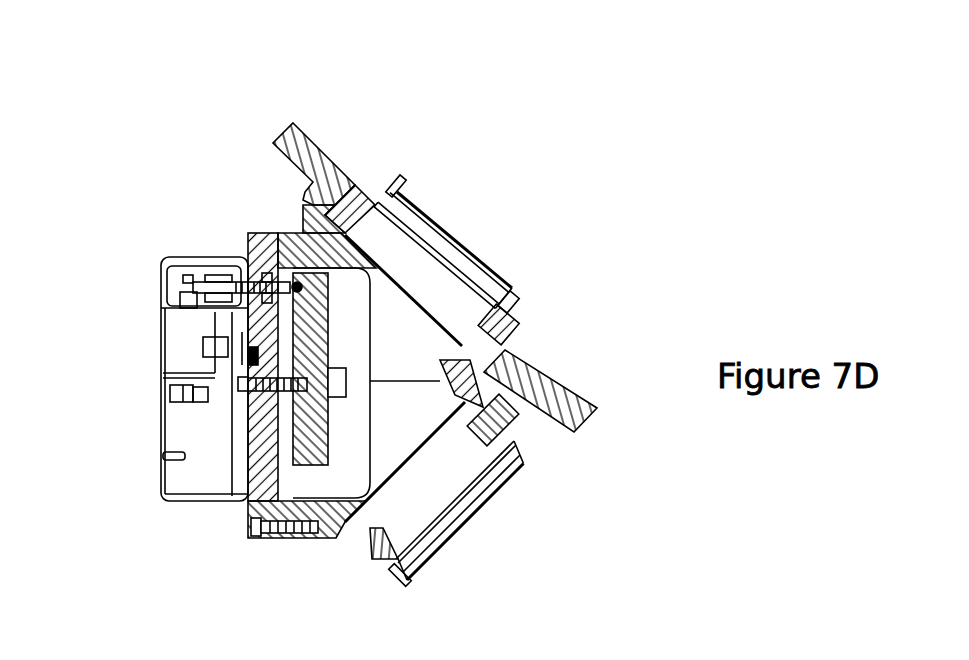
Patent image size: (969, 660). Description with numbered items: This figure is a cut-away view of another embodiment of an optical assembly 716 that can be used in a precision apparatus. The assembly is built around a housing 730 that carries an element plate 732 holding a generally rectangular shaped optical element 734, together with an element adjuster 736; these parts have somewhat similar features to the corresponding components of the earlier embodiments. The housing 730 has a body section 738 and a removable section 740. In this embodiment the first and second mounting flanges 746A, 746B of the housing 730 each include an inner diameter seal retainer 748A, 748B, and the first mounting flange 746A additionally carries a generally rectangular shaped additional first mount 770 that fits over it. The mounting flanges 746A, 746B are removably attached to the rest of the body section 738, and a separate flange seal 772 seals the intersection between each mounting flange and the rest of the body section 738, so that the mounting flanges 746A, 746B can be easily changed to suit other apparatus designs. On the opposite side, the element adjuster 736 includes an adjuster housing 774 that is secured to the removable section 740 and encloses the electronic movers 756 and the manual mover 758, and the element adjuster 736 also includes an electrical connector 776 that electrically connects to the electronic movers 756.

The optical assembly 716 is at (450, 136).
The housing 730 is at (314, 219).
The element plate 732 is at (300, 465).
The optical element 734 is at (322, 346).
The element adjuster 736 is at (178, 268).
The body section 738 is at (293, 228).
The removable section 740 is at (243, 519).
The first mounting flange 746A is at (530, 304).
The second mounting flange 746B is at (523, 452).
The inner diameter seal retainer 748A is at (398, 190).
The inner diameter seal retainer 748B is at (522, 452).
The electronic movers 756 is at (193, 287).
The manual mover 758 is at (246, 386).
The additional first mount 770 is at (586, 412).
The flange seal 772 is at (358, 538).
The adjuster housing 774 is at (248, 494).
The electrical connector 776 is at (203, 348).